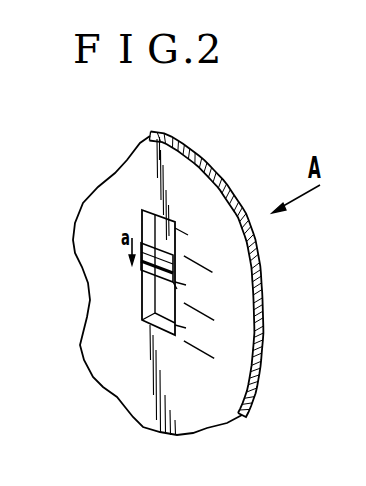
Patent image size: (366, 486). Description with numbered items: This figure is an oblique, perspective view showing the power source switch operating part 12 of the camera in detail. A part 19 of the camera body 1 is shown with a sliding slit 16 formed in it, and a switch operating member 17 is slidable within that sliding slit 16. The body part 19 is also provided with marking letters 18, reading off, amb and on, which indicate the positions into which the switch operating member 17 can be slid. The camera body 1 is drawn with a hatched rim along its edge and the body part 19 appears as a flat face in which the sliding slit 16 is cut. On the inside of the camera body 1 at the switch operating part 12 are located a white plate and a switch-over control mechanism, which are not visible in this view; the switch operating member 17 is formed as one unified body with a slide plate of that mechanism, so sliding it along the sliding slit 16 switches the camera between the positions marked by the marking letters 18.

The camera body 1 is at (187, 150).
The power source switch operating part 12 is at (210, 277).
The sliding slit 16 is at (147, 204).
The switch operating member 17 is at (150, 277).
The marking letters 18 is at (203, 230).
The body part 19 is at (135, 162).